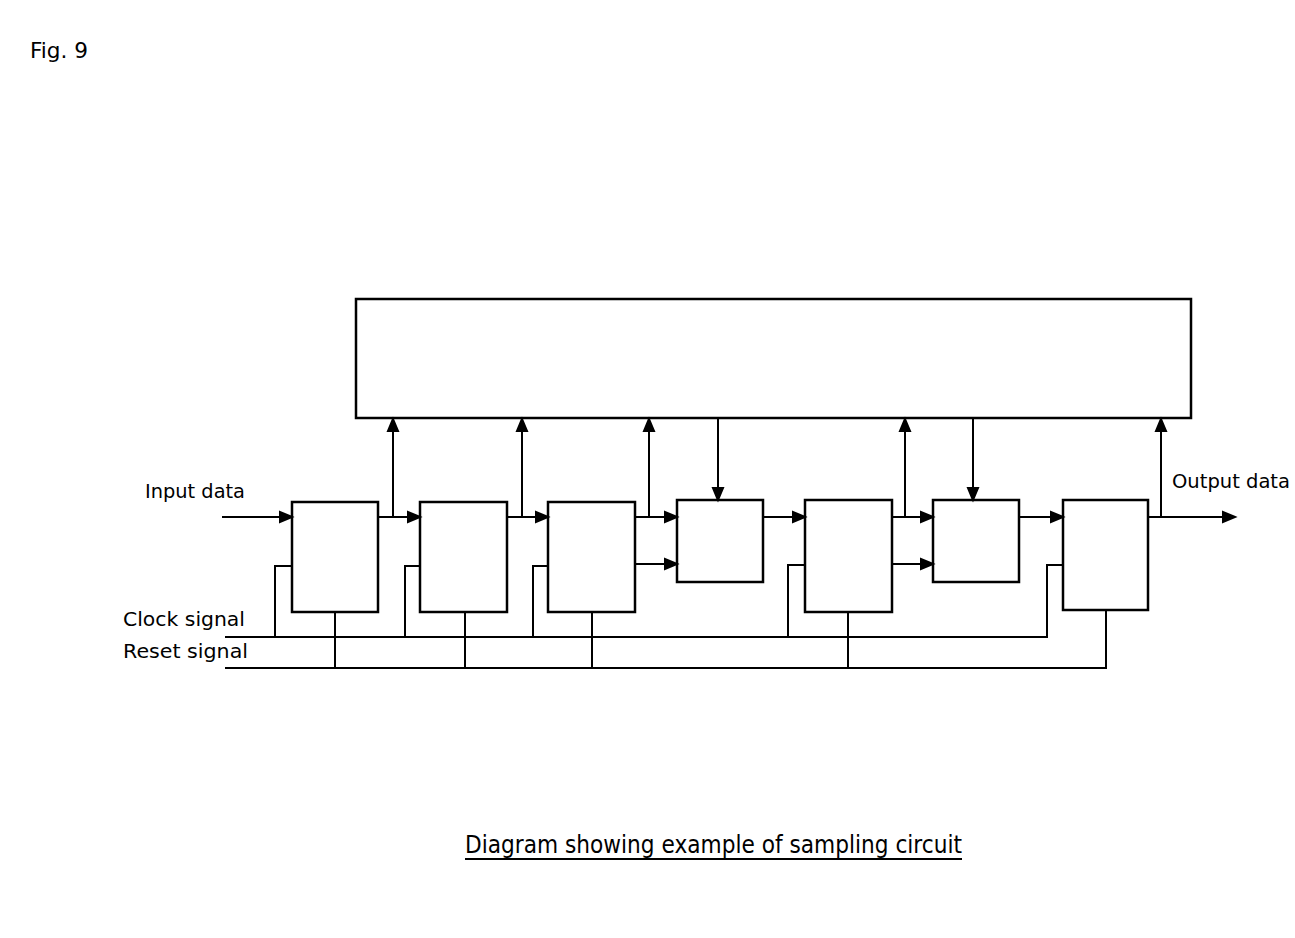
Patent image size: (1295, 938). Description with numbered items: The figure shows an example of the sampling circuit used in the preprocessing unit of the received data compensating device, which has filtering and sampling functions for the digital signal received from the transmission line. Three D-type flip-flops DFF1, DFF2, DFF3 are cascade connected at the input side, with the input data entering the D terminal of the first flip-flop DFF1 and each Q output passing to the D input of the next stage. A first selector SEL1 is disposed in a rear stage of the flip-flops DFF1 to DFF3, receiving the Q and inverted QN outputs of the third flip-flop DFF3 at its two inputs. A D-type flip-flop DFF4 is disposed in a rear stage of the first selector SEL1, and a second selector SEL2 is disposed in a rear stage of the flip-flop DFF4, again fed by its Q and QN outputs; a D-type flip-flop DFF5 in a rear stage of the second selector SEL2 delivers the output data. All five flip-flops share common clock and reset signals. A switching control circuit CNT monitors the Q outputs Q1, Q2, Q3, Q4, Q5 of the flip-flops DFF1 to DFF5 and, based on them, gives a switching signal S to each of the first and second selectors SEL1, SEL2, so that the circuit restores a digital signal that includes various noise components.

The switching control circuit CNT is at (763, 299).
The D-type flip-flop DFF1 is at (333, 508).
The D-type flip-flop DFF2 is at (463, 508).
The D-type flip-flop DFF3 is at (592, 508).
The D-type flip-flop DFF4 is at (846, 508).
The D-type flip-flop DFF5 is at (1140, 592).
The first selector SEL1 is at (720, 573).
The second selector SEL2 is at (980, 569).
The Q output Q1 is at (404, 468).
The Q output Q2 is at (533, 468).
The Q output Q3 is at (661, 468).
The Q output Q4 is at (916, 468).
The Q output Q5 is at (1173, 468).
The switching signal S is at (850, 459).